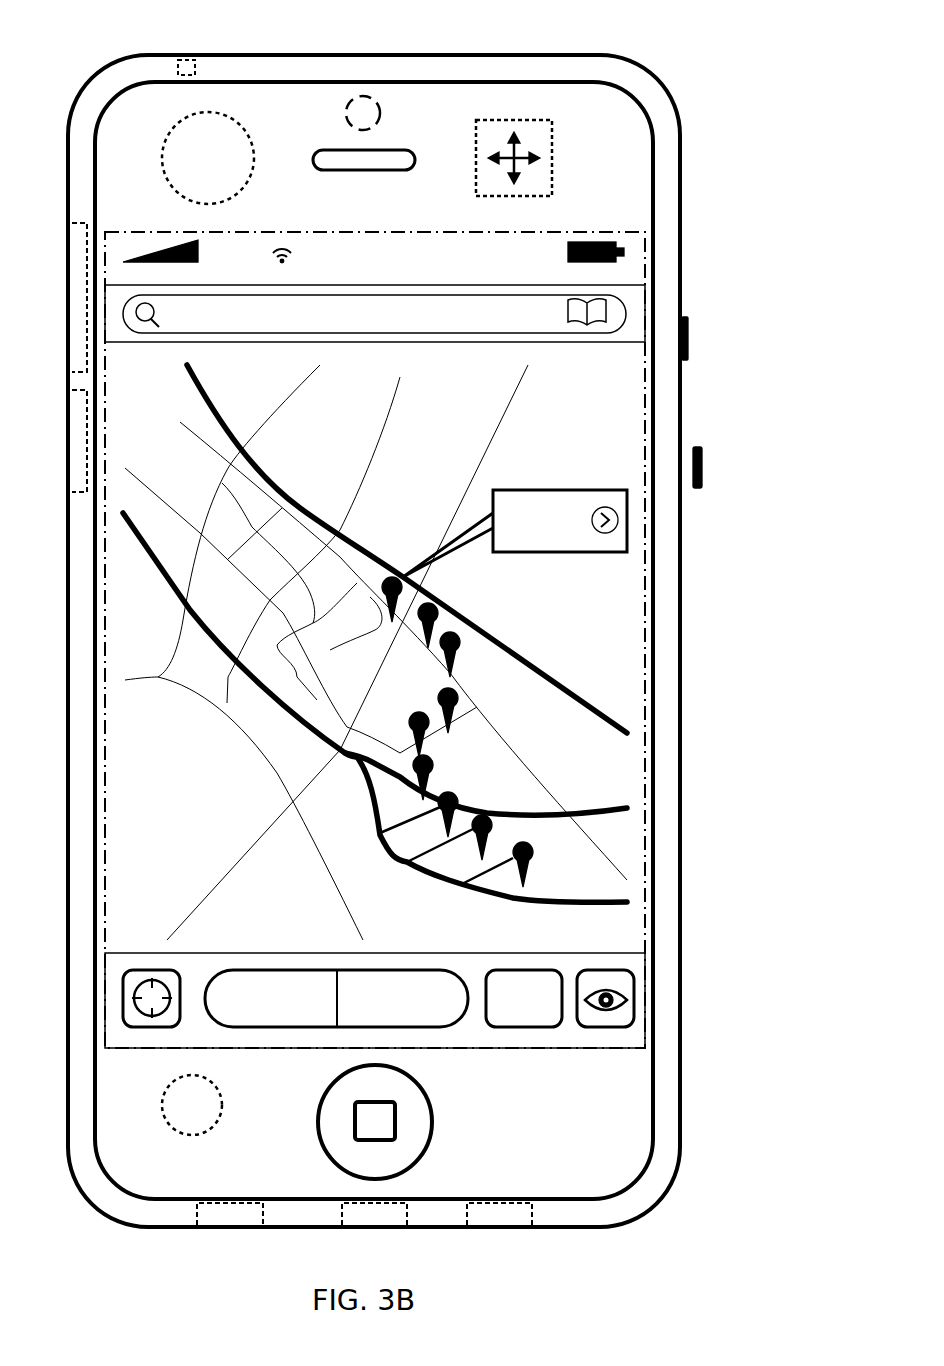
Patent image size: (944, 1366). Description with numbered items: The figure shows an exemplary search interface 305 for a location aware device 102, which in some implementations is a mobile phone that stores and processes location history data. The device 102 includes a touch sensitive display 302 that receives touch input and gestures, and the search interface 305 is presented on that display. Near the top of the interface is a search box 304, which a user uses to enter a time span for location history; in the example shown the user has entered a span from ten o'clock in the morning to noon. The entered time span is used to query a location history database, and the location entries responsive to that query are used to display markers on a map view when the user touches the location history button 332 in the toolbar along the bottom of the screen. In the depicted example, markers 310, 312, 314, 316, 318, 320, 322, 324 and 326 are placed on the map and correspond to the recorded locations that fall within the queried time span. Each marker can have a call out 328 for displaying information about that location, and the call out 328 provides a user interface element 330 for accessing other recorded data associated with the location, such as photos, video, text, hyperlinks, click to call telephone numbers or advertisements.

The location aware device 102 is at (460, 55).
The touch sensitive display 302 is at (577, 232).
The search box 304 is at (380, 315).
The search interface 305 is at (610, 425).
The marker 310 is at (393, 575).
The marker 312 is at (443, 605).
The marker 314 is at (460, 642).
The marker 316 is at (456, 703).
The marker 318 is at (428, 727).
The marker 320 is at (432, 768).
The marker 322 is at (393, 828).
The marker 324 is at (407, 862).
The marker 326 is at (460, 885).
The call out 328 is at (570, 490).
The user interface element 330 is at (605, 533).
The location history button 332 is at (525, 1027).